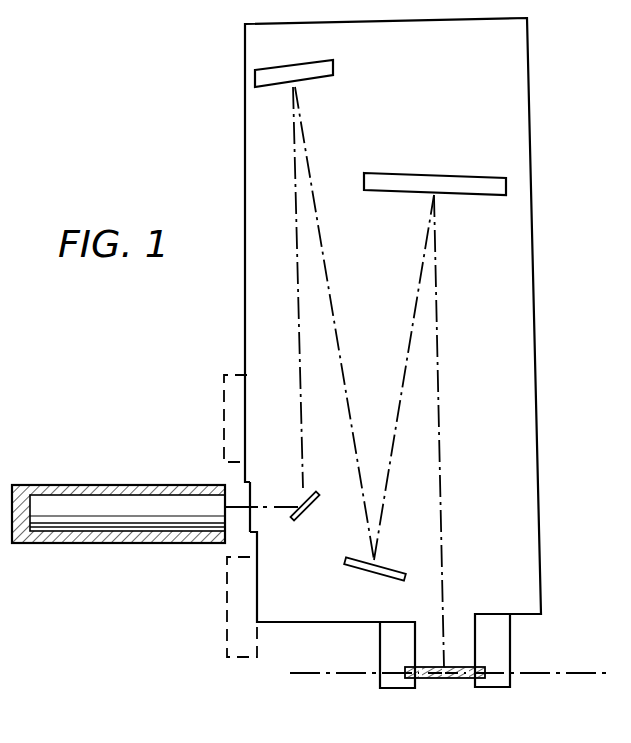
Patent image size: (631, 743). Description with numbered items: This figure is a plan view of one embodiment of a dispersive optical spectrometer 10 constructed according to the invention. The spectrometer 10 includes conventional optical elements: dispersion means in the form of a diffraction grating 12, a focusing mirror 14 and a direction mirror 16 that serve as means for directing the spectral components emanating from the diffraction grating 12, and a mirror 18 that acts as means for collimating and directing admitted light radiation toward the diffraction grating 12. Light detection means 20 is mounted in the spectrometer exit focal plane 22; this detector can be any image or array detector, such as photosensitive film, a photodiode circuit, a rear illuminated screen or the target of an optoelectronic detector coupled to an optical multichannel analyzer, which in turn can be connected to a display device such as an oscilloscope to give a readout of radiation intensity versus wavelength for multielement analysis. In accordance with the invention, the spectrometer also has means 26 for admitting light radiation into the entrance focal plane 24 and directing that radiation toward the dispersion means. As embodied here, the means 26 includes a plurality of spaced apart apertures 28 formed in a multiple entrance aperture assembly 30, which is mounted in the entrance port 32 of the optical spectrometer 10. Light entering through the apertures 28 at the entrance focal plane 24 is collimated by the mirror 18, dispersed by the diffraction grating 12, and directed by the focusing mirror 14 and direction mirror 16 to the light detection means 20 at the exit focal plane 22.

The dispersive optical spectrometer 10 is at (216, 75).
The diffraction grating 12 is at (352, 571).
The focusing mirror 14 is at (330, 62).
The direction mirror 16 is at (311, 510).
The mirror 18 is at (410, 174).
The light detection means 20 is at (132, 486).
The spectrometer exit focal plane 22 is at (222, 410).
The entrance focal plane 24 is at (543, 674).
The means for admitting light radiation 26 is at (448, 665).
The spaced apart apertures 28 is at (443, 680).
The multiple entrance aperture assembly 30 is at (456, 680).
The entrance port 32 is at (424, 680).